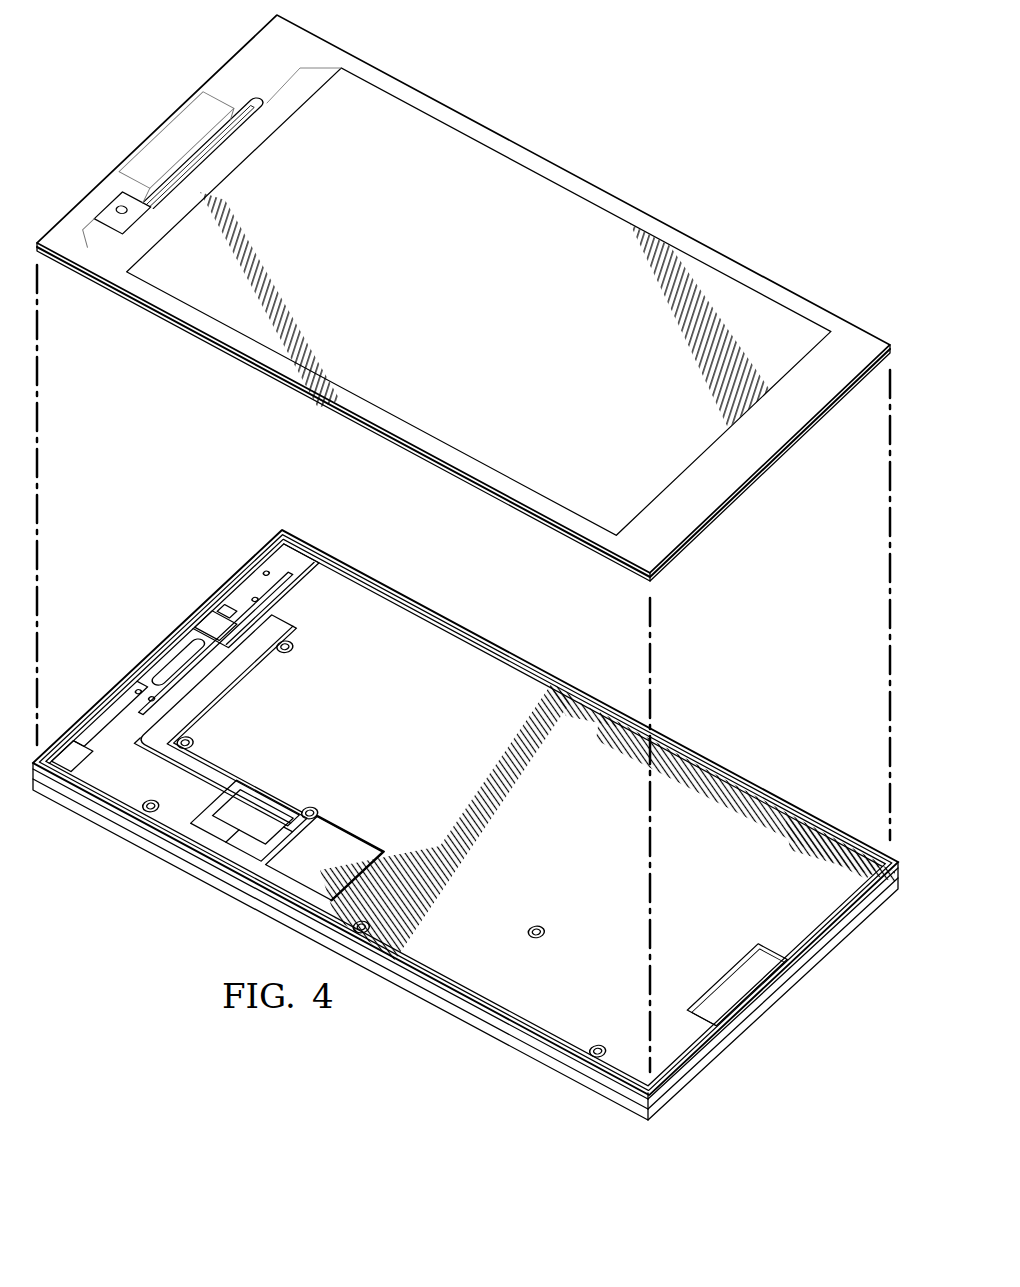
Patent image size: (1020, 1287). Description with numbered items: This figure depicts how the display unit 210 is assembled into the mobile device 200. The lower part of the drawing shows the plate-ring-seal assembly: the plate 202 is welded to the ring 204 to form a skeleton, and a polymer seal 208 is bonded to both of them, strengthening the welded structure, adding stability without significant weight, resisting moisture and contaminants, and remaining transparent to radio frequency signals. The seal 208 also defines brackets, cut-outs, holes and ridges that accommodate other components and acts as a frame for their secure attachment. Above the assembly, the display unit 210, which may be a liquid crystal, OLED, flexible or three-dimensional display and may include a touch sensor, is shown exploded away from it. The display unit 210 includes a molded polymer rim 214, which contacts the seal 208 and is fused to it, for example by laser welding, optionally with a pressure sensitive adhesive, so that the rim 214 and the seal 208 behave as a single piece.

The display assembly 200 is at (731, 668).
The plate 202 is at (751, 803).
The ring 204 is at (140, 842).
The polymer seal 208 is at (667, 1101).
The display unit 210 is at (549, 198).
The polymer rim 214 is at (765, 468).